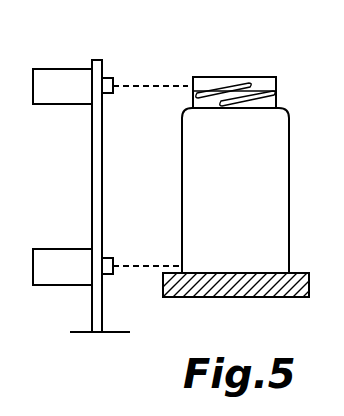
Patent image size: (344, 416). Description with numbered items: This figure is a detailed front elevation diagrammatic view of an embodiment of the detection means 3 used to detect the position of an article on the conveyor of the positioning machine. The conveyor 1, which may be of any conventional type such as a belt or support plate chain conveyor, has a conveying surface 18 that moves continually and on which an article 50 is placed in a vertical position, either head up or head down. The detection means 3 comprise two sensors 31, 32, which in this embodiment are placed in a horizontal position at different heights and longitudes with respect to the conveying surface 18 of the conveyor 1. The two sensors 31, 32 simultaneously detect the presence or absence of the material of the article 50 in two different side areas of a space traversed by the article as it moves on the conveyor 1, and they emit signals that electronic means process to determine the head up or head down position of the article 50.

The conveyor 1 is at (200, 312).
The detection means 3 is at (128, 72).
The conveying surface 18 is at (300, 271).
The sensor 31 is at (74, 75).
The sensor 32 is at (75, 257).
The article 50 is at (190, 174).